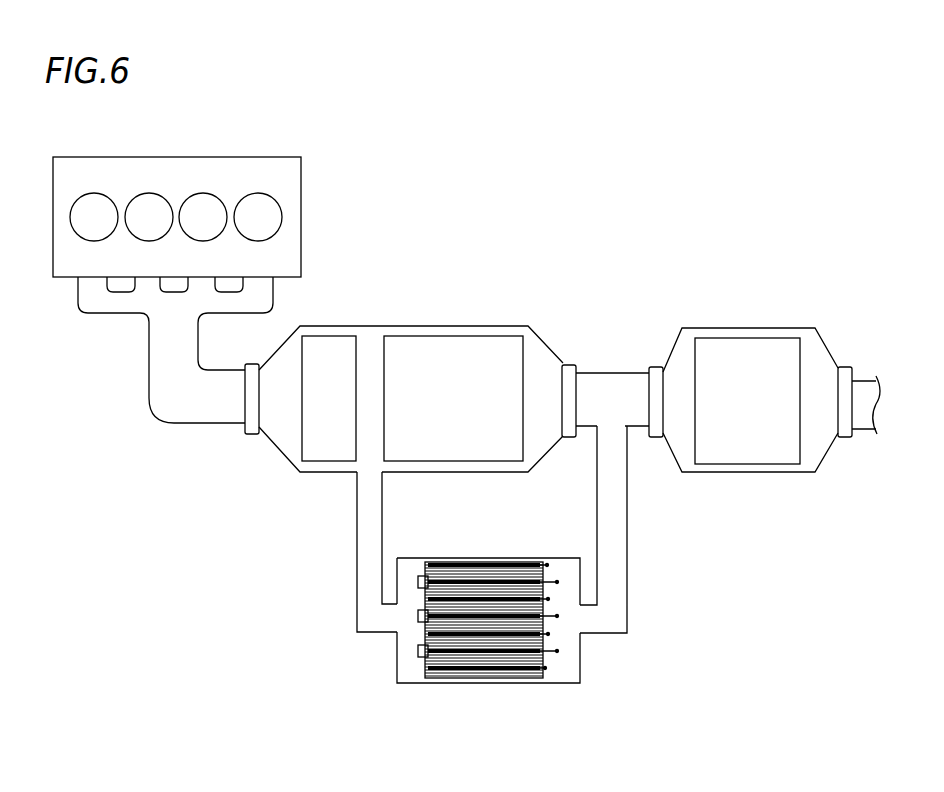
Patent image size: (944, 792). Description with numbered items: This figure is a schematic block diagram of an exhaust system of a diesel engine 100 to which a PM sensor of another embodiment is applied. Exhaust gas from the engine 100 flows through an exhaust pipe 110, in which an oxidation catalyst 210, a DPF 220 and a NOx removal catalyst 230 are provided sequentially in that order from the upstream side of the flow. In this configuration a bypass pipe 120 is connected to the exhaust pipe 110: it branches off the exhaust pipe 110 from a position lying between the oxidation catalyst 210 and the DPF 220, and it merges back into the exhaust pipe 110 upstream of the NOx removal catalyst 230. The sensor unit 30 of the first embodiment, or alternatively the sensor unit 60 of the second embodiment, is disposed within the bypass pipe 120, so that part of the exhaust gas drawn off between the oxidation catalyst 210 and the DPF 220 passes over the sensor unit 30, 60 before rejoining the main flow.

The engine 100 is at (243, 167).
The exhaust pipe 110 is at (183, 427).
The bypass pipe 120 is at (357, 558).
The oxidation catalyst 210 is at (344, 407).
The DPF 220 is at (468, 405).
The NOx removal catalyst 230 is at (765, 409).
The sensor unit 30 is at (488, 661).
The sensor unit 60 is at (495, 690).